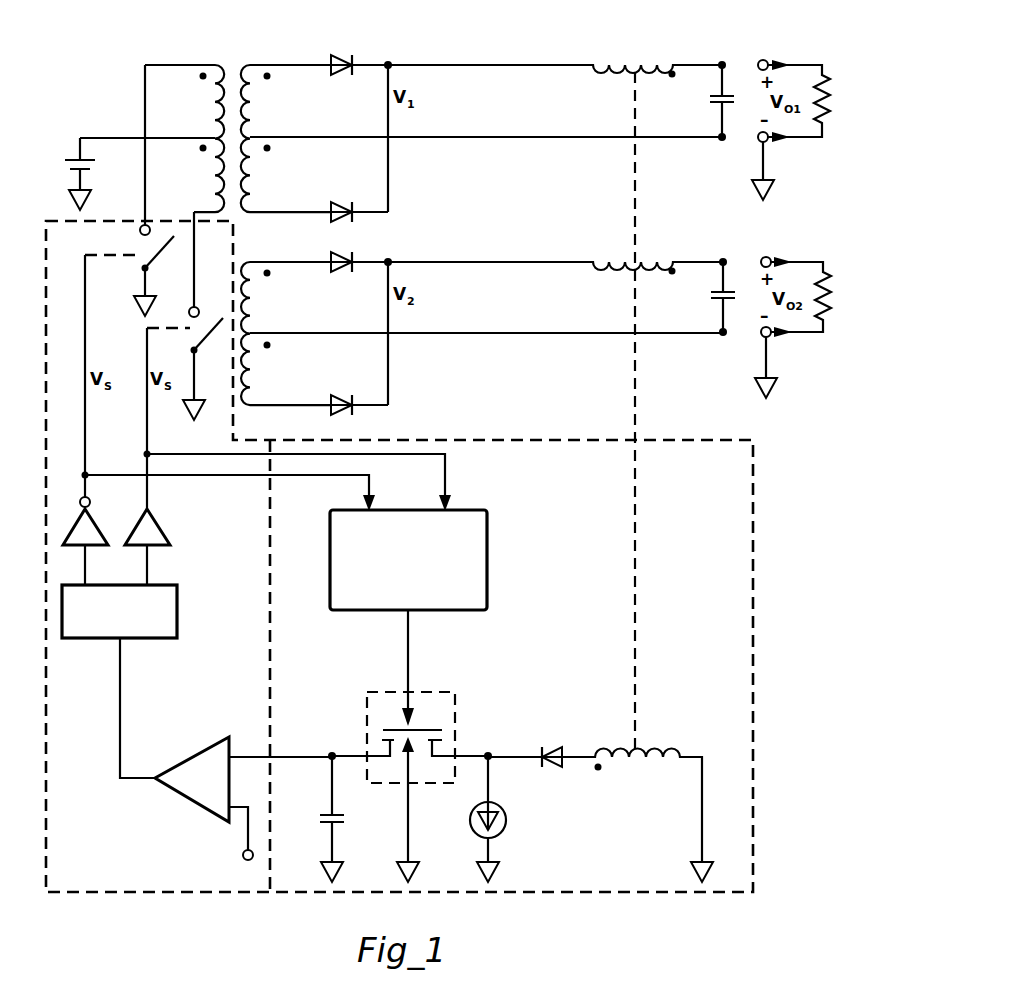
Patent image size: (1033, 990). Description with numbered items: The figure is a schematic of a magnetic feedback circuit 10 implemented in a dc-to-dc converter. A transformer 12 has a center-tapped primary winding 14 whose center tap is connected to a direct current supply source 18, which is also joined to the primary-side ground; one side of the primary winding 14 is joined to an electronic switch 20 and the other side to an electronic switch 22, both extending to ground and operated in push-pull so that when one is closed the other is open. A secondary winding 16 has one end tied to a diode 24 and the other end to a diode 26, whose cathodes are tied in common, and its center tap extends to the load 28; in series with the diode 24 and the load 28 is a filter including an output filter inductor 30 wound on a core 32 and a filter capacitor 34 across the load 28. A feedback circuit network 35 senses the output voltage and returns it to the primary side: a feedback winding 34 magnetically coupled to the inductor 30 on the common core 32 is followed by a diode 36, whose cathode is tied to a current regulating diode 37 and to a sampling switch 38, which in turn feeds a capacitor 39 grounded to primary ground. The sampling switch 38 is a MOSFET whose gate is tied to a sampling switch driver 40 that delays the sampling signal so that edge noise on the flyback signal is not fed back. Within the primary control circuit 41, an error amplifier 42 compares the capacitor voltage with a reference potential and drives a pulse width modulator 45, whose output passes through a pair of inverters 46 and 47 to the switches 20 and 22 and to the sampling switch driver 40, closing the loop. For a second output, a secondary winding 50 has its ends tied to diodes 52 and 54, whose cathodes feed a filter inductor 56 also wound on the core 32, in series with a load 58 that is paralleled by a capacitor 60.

The magnetic feedback circuit 10 is at (118, 108).
The transformer 12 is at (232, 72).
The primary winding 14 is at (210, 79).
The secondary winding 16 is at (257, 92).
The direct current supply source 18 is at (70, 170).
The electronic switch 20 is at (172, 246).
The electronic switch 22 is at (220, 334).
The diode 24 is at (340, 60).
The diode 26 is at (330, 216).
The load 28 is at (826, 88).
The output filter inductor 30 is at (600, 60).
The core 32 is at (637, 175).
The filter capacitor / feedback winding 34 is at (716, 105).
The feedback circuit network 35 is at (628, 893).
The diode 36 is at (554, 770).
The current regulating diode 37 is at (486, 823).
The sampling switch 38 is at (452, 706).
The capacitor 39 is at (319, 822).
The sampling switch driver 40 is at (454, 512).
The primary control circuit 41 is at (152, 893).
The error amplifier 42 is at (224, 810).
The pulse width modulator 45 is at (132, 645).
The inverter 46 is at (122, 520).
The inverter 47 is at (184, 520).
The secondary winding 50 is at (241, 270).
The diode 52 is at (340, 258).
The diode 54 is at (332, 408).
The filter inductor 56 is at (594, 258).
The load 58 is at (826, 286).
The capacitor 60 is at (714, 304).